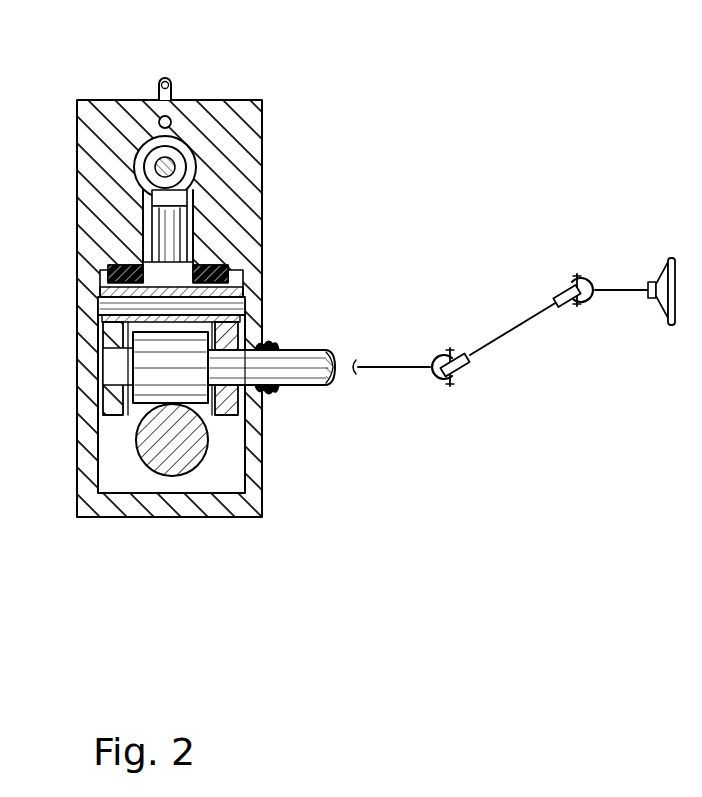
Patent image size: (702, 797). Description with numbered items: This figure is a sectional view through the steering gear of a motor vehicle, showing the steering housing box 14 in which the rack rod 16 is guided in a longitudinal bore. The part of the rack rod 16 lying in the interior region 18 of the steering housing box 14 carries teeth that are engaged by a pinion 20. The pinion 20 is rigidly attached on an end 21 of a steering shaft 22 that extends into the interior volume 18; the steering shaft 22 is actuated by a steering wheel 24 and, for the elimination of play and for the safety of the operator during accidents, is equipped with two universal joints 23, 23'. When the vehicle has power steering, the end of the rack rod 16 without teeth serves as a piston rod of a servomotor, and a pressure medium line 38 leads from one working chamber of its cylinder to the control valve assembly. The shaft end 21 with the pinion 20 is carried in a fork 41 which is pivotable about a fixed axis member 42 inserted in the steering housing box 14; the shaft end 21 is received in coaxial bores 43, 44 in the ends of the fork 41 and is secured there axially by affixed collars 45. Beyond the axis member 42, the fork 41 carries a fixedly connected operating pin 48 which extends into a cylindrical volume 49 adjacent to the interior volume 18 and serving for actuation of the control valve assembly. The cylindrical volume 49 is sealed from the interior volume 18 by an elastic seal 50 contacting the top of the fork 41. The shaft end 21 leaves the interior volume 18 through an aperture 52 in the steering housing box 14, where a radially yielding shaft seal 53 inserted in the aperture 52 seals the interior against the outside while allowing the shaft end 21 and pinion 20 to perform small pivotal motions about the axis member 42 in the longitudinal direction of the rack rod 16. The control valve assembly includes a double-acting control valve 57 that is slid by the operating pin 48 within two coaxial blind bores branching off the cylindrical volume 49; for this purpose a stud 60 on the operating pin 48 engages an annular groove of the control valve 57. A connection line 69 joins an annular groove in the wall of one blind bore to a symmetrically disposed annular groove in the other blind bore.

The steering housing box 14 is at (84, 190).
The rack rod 16 is at (194, 440).
The interior region 18 is at (145, 478).
The pinion 20 is at (98, 335).
The end of steering shaft 21 is at (305, 377).
The steering shaft 22 is at (605, 300).
The universal joint 23 is at (447, 341).
The universal joint 23' is at (562, 273).
The steering wheel 24 is at (668, 265).
The pressure medium line 38 is at (168, 76).
The fork 41 is at (240, 280).
The axis member 42 is at (262, 300).
The coaxial bore 43 is at (290, 355).
The coaxial bore 44 is at (120, 378).
The collar 45 is at (110, 410).
The operating pin 48 is at (140, 258).
The cylindrical volume 49 is at (150, 228).
The elastic seal 50 is at (105, 275).
The aperture 52 is at (250, 400).
The shaft seal 53 is at (272, 343).
The double-acting control valve 57 is at (157, 163).
The stud 60 is at (195, 192).
The connection line 69 is at (170, 118).